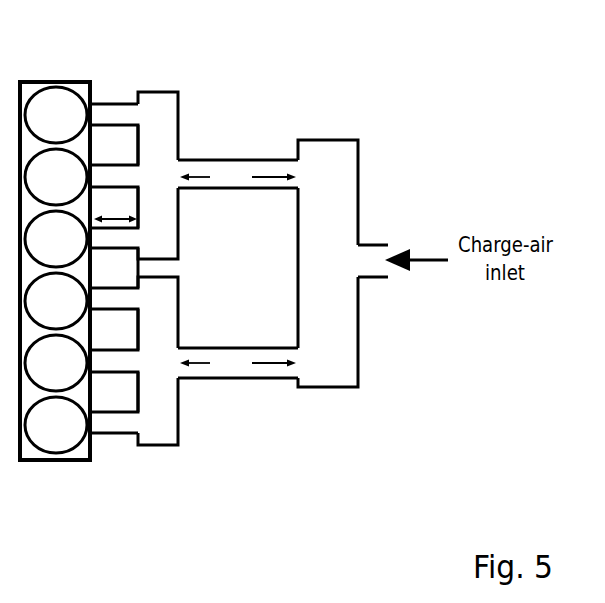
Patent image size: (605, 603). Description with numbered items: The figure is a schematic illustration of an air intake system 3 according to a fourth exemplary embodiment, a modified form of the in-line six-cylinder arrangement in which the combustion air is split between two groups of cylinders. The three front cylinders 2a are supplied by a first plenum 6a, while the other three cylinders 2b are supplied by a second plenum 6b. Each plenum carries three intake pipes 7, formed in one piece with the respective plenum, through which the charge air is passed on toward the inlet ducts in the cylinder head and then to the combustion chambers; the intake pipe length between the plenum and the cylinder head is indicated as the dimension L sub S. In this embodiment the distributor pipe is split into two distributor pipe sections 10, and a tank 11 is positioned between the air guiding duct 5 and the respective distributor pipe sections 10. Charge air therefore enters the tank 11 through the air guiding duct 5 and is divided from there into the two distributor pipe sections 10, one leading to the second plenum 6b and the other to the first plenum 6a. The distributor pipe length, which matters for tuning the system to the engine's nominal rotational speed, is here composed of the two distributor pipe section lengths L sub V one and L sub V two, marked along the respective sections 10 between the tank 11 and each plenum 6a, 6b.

The front cylinders 2a is at (72, 317).
The other cylinders 2b is at (72, 131).
The air intake system 3 is at (372, 128).
The air guiding duct 5 is at (375, 245).
The first plenum 6a is at (160, 394).
The second plenum 6b is at (156, 102).
The intake pipes 7 is at (113, 112).
The distributor pipe sections 10 is at (273, 180).
The tank 11 is at (333, 303).